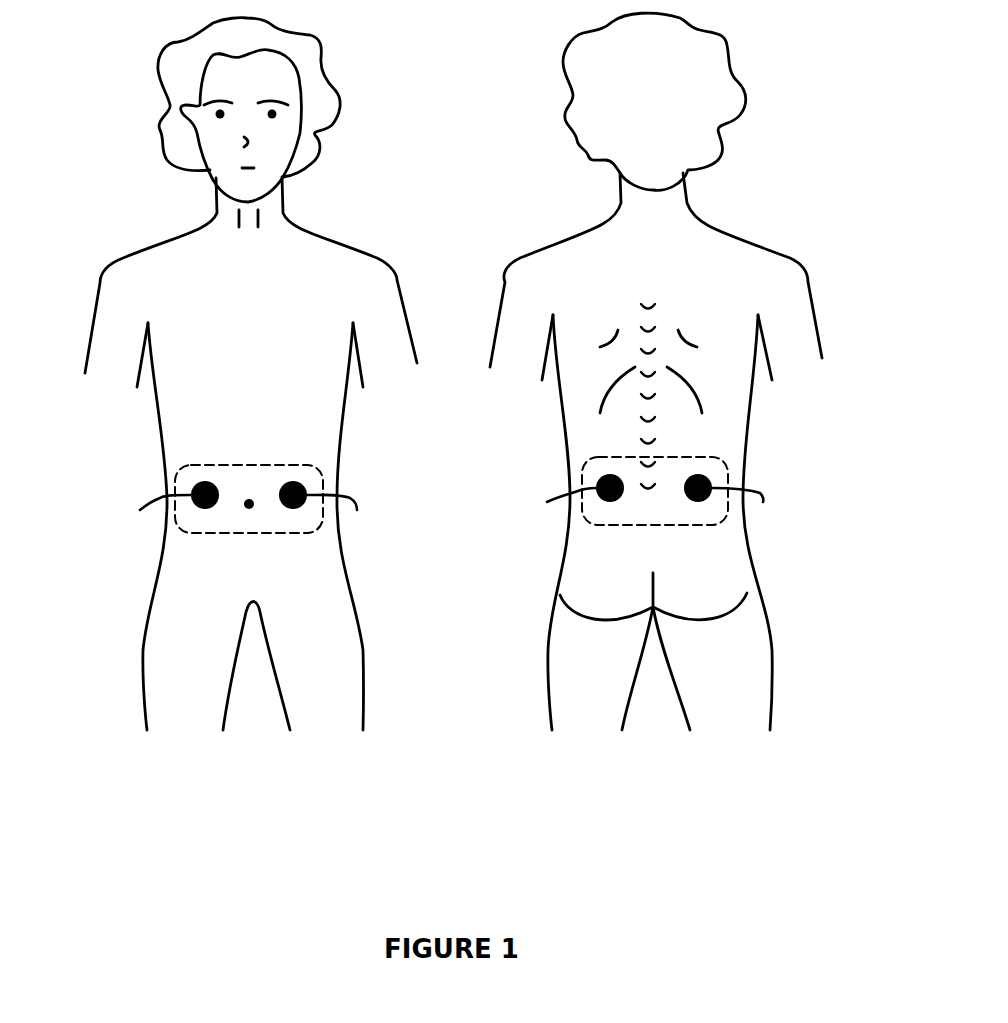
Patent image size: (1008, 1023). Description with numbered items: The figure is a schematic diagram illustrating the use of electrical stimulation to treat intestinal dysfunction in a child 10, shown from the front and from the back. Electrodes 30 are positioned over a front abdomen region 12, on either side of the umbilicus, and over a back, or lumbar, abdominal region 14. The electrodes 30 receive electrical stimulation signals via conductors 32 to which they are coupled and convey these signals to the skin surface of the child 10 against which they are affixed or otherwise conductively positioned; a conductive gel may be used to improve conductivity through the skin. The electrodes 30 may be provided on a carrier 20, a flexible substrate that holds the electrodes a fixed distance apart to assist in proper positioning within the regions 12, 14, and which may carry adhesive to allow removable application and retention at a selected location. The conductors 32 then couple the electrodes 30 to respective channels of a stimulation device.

The child 10 is at (497, 209).
The front abdomen region 12 is at (366, 450).
The back abdominal region 14 is at (760, 440).
The carrier 20 is at (223, 462).
The electrodes 30 is at (205, 507).
The conductors 32 is at (148, 502).